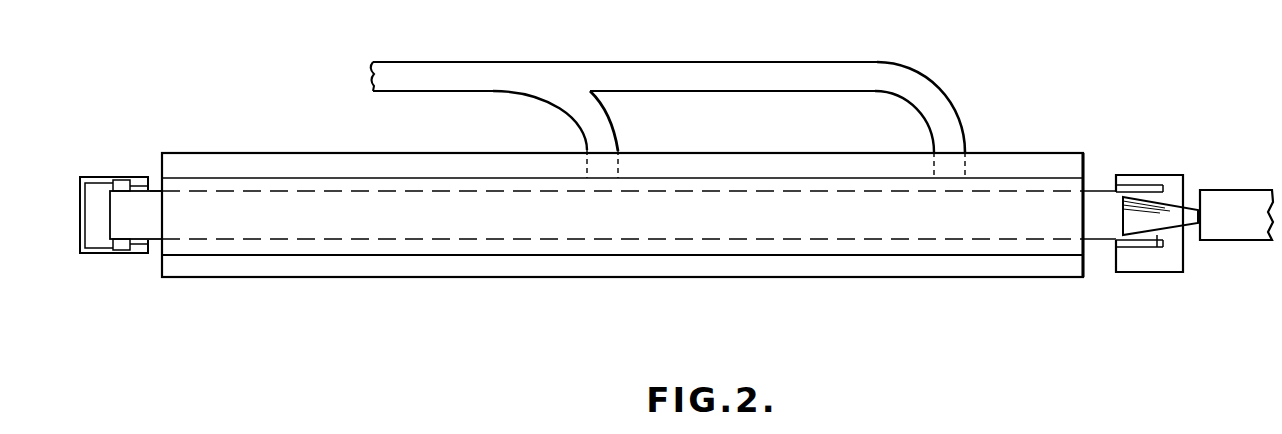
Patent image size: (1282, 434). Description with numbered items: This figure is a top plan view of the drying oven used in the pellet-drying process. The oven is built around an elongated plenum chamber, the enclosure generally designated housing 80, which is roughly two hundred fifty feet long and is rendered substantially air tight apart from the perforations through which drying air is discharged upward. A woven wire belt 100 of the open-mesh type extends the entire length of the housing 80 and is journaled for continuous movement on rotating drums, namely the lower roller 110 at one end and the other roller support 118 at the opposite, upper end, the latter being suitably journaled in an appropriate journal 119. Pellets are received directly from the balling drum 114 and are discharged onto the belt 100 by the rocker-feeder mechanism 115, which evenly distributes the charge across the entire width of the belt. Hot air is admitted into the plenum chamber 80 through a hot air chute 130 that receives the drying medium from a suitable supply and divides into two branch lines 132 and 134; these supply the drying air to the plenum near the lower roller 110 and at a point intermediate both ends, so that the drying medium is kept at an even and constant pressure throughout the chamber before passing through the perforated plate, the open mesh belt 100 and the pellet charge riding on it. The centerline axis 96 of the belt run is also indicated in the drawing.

The plenum chamber enclosure 80 is at (793, 280).
The centerline / shaft axis 96 is at (1098, 192).
The wire belt 100 is at (156, 230).
The lower roller 110 is at (1152, 245).
The balling drum 114 is at (1230, 200).
The rocker-feeder mechanism 115 is at (1184, 205).
The roller support 118 is at (196, 427).
The journal 119 is at (120, 178).
The hot air chute 130 is at (467, 68).
The branch line 132 is at (608, 130).
The branch line 134 is at (955, 132).